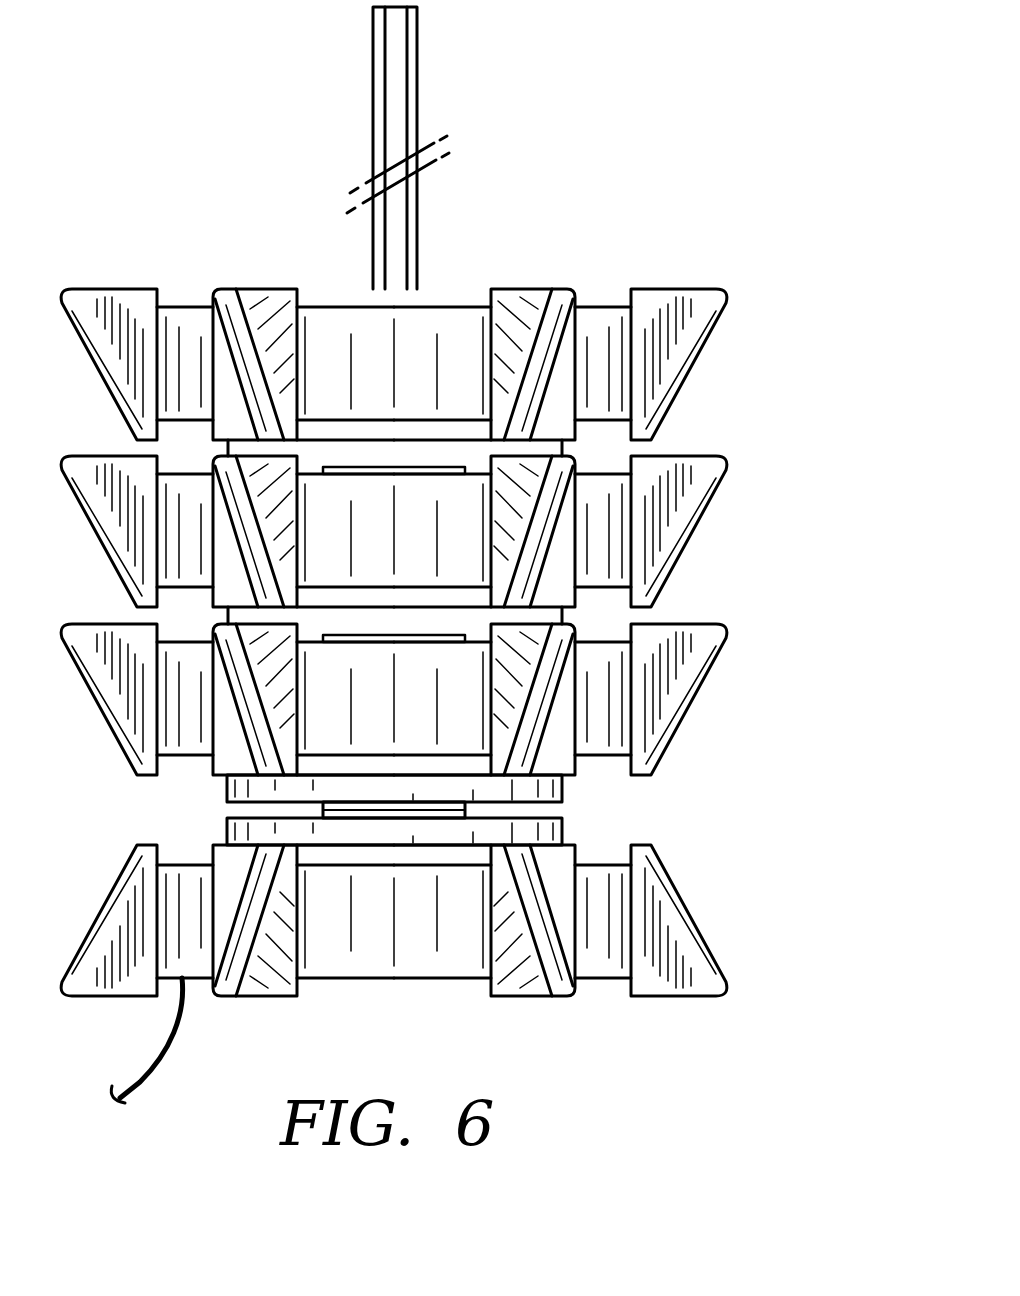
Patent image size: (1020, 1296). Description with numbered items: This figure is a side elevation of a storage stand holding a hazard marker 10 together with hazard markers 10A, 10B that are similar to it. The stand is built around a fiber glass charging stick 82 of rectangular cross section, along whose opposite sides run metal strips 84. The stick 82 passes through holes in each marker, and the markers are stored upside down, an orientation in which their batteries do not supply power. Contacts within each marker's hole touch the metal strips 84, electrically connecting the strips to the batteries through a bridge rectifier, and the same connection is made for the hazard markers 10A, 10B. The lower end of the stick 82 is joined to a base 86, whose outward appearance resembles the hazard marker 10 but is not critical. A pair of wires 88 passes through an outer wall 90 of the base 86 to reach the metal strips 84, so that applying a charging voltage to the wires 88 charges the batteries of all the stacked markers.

The hazard marker 10 is at (700, 384).
The hazard marker 10A is at (698, 554).
The hazard marker 10B is at (698, 721).
The charging stick 82 is at (419, 29).
The metal strips 84 is at (396, 97).
The base 86 is at (615, 845).
The wires 88 is at (160, 1033).
The outer wall 90 is at (355, 952).